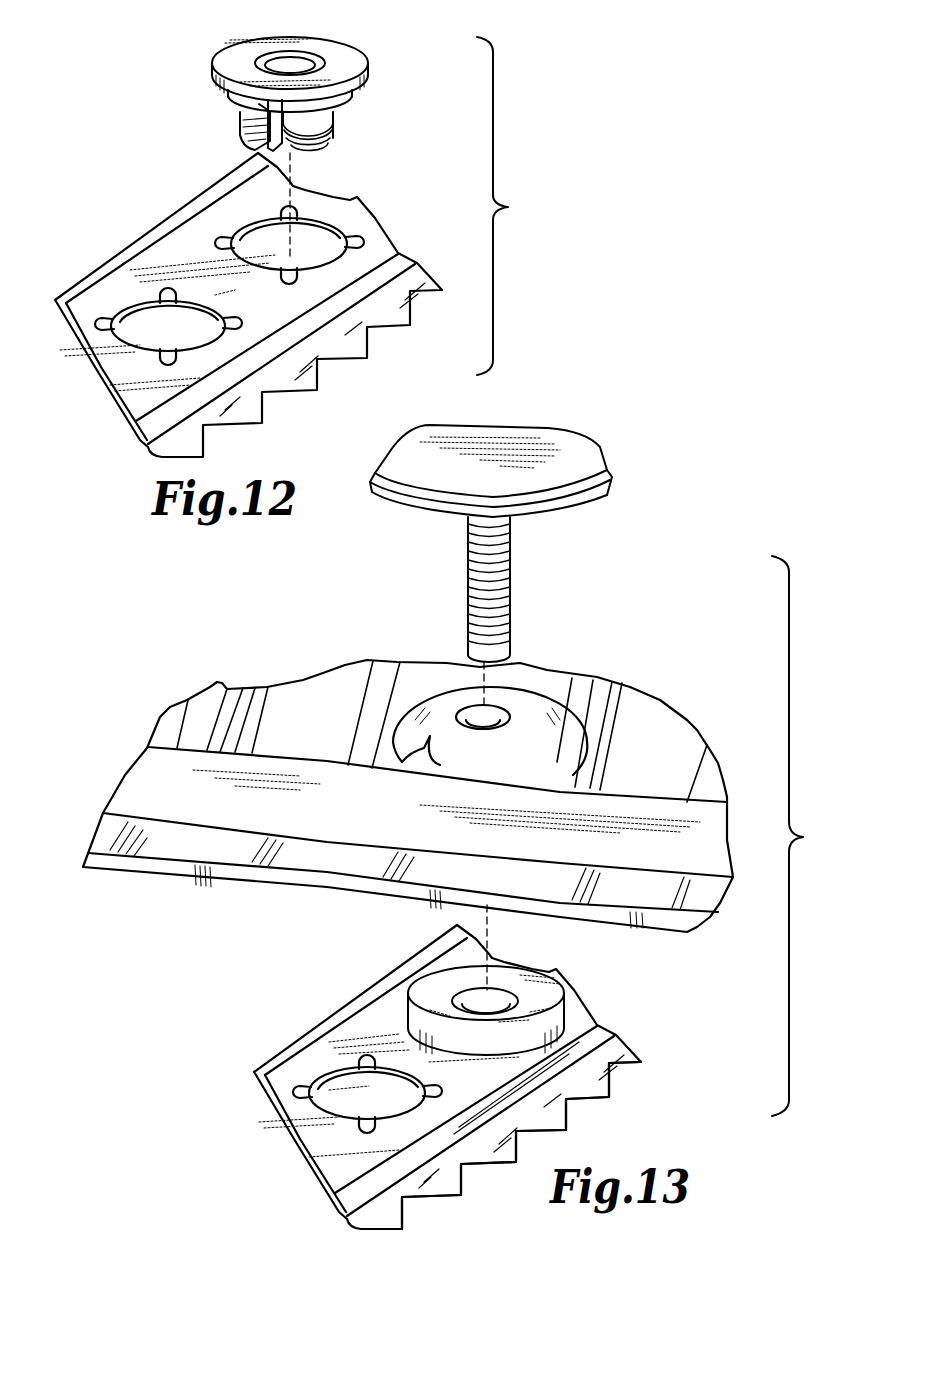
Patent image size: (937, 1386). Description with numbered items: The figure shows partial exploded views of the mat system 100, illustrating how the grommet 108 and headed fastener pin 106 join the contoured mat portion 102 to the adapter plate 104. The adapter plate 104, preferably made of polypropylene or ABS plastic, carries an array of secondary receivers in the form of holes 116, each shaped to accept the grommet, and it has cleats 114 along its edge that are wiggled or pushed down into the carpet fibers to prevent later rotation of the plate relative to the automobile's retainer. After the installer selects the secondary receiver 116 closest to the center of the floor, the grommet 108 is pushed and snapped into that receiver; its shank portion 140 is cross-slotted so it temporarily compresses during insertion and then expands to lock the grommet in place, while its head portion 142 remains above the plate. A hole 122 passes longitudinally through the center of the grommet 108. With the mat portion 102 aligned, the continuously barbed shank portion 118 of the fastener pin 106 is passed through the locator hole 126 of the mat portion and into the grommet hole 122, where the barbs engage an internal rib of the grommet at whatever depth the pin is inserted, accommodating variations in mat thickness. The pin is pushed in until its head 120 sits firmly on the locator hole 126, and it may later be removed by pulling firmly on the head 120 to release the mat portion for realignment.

In FIG. 13, the mat system 100 is at (803, 837).
In FIG. 13, the contoured mat portion 102 is at (370, 643).
In FIG. 12, the adapter plate 104 is at (157, 213).
In FIG. 13, the adapter plate 104 is at (460, 1077).
In FIG. 13, the headed fastener pin 106 is at (530, 543).
In FIG. 12, the grommet 108 is at (298, 83).
In FIG. 13, the grommet 108 is at (507, 995).
In FIG. 13, the cleats 114 is at (519, 1145).
In FIG. 12, the secondary receivers (holes) 116 is at (248, 226).
In FIG. 13, the secondary receivers (holes) 116 is at (342, 1127).
In FIG. 13, the shank portion of fastener pin 118 is at (512, 574).
In FIG. 13, the head of fastener pin 120 is at (610, 466).
In FIG. 12, the grommet hole 122 is at (263, 51).
In FIG. 13, the grommet hole 122 is at (514, 1000).
In FIG. 13, the locator hole 126 is at (506, 706).
In FIG. 12, the shank portion of grommet 140 is at (334, 131).
In FIG. 12, the head portion of grommet 142 is at (368, 78).
In FIG. 13, the head portion of grommet 142 is at (432, 970).